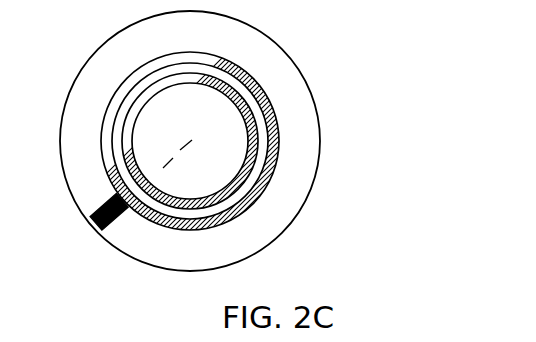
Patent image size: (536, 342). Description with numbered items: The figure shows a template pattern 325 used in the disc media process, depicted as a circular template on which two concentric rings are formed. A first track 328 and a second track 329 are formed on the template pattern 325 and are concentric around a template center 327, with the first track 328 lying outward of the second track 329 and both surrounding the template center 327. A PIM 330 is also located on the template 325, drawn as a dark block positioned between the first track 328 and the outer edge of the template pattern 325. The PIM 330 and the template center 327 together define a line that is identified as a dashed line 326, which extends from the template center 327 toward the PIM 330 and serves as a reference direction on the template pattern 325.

The template pattern 325 is at (128, 0).
The dashed line 326 is at (163, 168).
The template center 327 is at (192, 140).
The first track 328 is at (267, 190).
The second track 329 is at (258, 153).
The PIM 330 is at (103, 229).